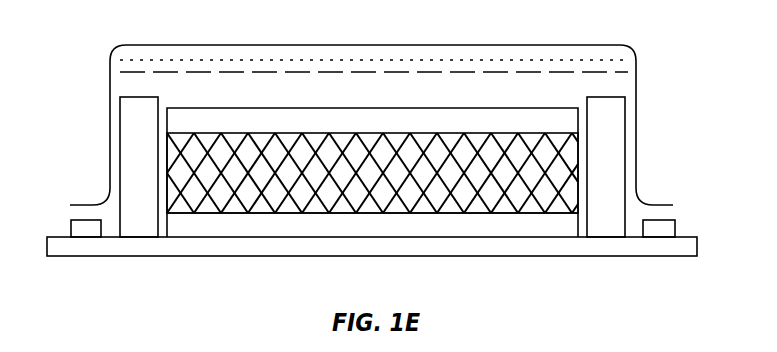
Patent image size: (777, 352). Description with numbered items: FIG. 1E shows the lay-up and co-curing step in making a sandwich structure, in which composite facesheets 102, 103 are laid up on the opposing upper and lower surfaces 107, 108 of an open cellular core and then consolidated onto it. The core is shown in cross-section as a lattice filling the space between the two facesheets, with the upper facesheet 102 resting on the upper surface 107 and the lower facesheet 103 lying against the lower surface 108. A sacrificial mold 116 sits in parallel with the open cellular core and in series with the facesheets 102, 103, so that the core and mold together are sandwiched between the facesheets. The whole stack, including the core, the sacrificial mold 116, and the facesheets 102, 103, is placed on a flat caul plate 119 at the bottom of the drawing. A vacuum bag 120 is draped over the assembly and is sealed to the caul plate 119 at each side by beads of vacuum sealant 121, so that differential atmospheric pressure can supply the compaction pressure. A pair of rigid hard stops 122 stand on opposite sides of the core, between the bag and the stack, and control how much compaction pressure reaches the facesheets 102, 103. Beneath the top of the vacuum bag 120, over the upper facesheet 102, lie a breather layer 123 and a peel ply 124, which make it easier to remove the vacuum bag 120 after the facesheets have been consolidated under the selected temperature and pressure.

The first composite facesheet 102 is at (290, 122).
The second composite facesheet 103 is at (290, 225).
The upper surface of the open cellular core 107 is at (515, 133).
The lower surface of the open cellular core 108 is at (515, 212).
The sacrificial mold 116 is at (445, 213).
The caul plate 119 is at (358, 245).
The vacuum bag 120 is at (638, 113).
The vacuum sealant 121 is at (85, 230).
The rigid hard stops 122 is at (137, 153).
The breather layer 123 is at (383, 60).
The peel ply 124 is at (357, 71).